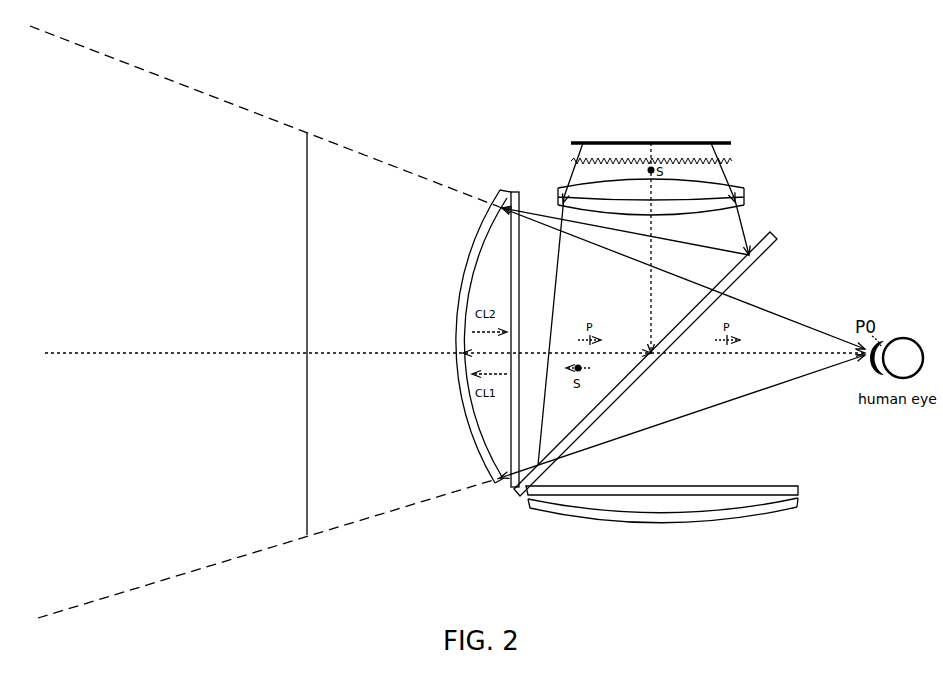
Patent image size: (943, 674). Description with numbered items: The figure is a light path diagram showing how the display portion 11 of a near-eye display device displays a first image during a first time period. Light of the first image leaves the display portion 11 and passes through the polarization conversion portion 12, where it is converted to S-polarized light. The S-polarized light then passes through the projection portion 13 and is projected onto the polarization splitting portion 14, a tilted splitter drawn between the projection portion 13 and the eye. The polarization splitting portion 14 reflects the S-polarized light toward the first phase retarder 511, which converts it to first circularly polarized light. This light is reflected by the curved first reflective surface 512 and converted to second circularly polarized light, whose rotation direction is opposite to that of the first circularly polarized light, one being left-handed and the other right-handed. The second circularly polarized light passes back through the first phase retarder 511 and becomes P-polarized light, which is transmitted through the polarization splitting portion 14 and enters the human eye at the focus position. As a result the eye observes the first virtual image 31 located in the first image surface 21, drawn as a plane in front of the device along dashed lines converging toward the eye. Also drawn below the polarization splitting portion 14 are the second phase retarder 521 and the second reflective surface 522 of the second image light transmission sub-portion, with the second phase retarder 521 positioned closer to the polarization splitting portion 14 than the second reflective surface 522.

The display portion 11 is at (651, 127).
The polarization conversion portion 12 is at (675, 163).
The projection portion 13 is at (670, 197).
The polarization splitting portion 14 is at (663, 353).
The first phase retarder 511 is at (537, 339).
The first reflective surface 512 is at (469, 336).
The second phase retarder 521 is at (663, 475).
The second reflective surface 522 is at (684, 518).
The first image surface 21 is at (447, 322).
The first virtual image 31 is at (307, 227).